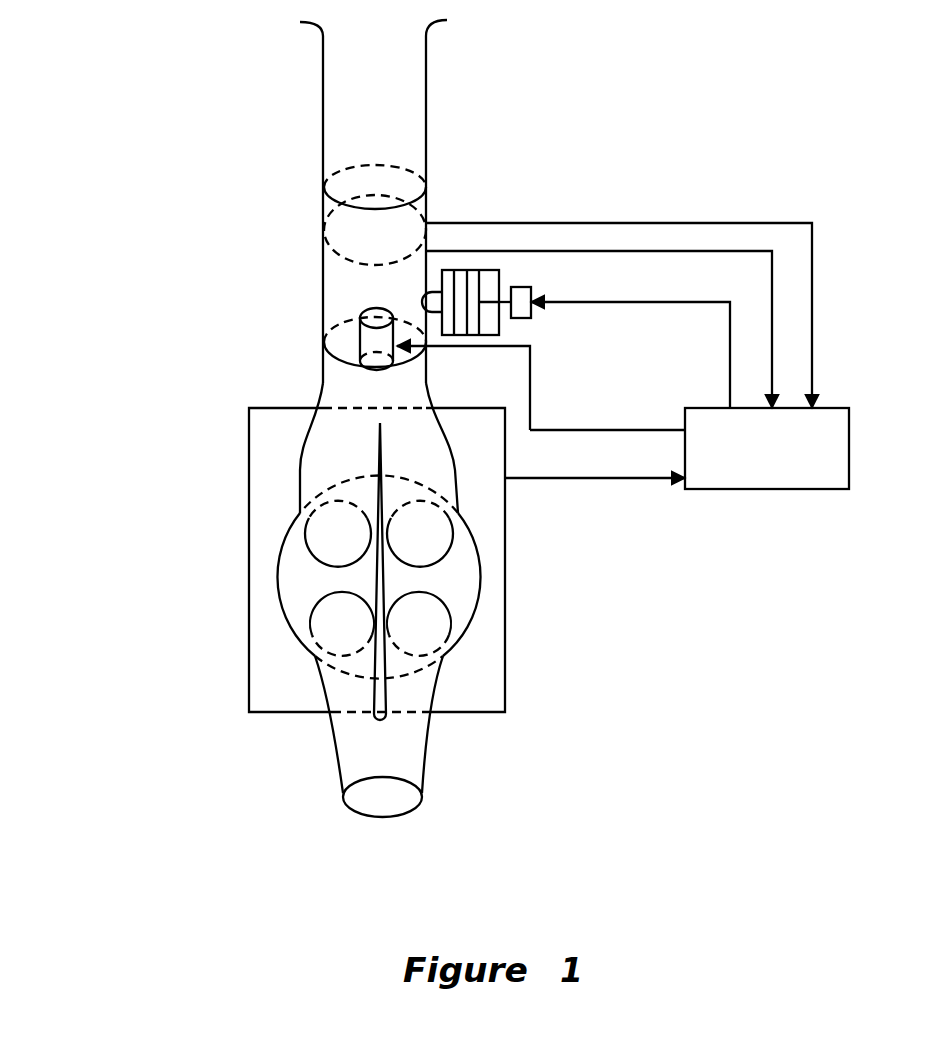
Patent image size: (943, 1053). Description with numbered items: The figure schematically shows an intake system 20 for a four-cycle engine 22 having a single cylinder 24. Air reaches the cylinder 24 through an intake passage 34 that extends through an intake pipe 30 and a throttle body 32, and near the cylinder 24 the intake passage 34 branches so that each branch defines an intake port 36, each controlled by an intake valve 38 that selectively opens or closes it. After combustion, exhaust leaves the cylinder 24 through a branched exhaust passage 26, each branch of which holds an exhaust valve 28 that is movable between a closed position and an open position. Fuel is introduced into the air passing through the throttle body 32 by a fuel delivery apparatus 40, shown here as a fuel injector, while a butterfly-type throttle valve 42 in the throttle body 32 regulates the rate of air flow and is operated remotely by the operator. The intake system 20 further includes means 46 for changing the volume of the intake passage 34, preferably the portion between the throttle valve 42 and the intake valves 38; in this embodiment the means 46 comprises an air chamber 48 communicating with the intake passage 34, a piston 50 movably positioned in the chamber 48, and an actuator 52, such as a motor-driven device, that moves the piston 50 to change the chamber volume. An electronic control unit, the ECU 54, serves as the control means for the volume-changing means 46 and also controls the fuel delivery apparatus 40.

The intake system 20 is at (147, 210).
The engine 22 is at (590, 727).
The cylinder 24 is at (505, 680).
The exhaust passage 26 is at (340, 762).
The exhaust valve 28 is at (320, 628).
The intake pipe 30 is at (323, 105).
The throttle body 32 is at (323, 295).
The intake passage 34 is at (370, 396).
The intake port 36 is at (310, 452).
The intake valve 38 is at (330, 545).
The fuel delivery apparatus 40 is at (360, 340).
The throttle valve 42 is at (323, 262).
The means for changing the volume of the intake passage 46 is at (530, 330).
The air chamber 48 is at (448, 270).
The piston 50 is at (467, 270).
The actuator 52 is at (533, 315).
The ECU 54 is at (830, 490).